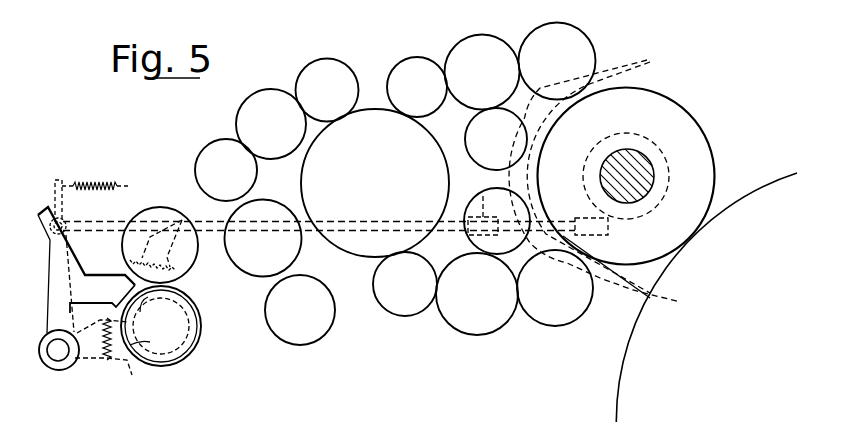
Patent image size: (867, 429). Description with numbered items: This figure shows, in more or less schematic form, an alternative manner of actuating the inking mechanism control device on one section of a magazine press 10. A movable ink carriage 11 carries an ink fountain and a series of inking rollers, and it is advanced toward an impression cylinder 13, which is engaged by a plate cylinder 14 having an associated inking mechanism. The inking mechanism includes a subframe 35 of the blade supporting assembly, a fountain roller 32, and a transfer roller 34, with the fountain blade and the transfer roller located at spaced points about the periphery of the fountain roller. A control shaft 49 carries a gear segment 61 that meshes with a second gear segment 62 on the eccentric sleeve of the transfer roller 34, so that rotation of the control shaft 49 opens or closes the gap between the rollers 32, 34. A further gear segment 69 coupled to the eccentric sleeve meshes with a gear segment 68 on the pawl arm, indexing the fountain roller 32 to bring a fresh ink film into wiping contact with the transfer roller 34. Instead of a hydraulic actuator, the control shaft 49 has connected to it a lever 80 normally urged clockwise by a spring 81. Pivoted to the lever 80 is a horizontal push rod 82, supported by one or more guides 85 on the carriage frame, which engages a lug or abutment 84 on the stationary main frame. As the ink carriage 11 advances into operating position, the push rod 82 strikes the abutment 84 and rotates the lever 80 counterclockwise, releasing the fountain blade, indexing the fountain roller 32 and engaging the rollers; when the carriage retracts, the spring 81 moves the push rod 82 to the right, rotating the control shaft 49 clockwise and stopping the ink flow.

The magazine press 10 is at (648, 58).
The ink carriage 11 is at (630, 60).
The impression cylinder 13 is at (753, 191).
The plate cylinder 14 is at (707, 142).
The fountain roller 32 is at (153, 207).
The transfer roller 34 is at (165, 366).
The subframe 35 is at (60, 308).
The control shaft 49 is at (59, 352).
The gear segment 61 is at (105, 363).
The second gear segment 62 is at (123, 362).
The gear segment 68 is at (133, 258).
The gear segment 69 is at (177, 281).
The lever 80 is at (66, 203).
The spring 81 is at (98, 184).
The push rod 82 is at (349, 232).
The abutment 84 is at (600, 237).
The guides 85 is at (484, 200).